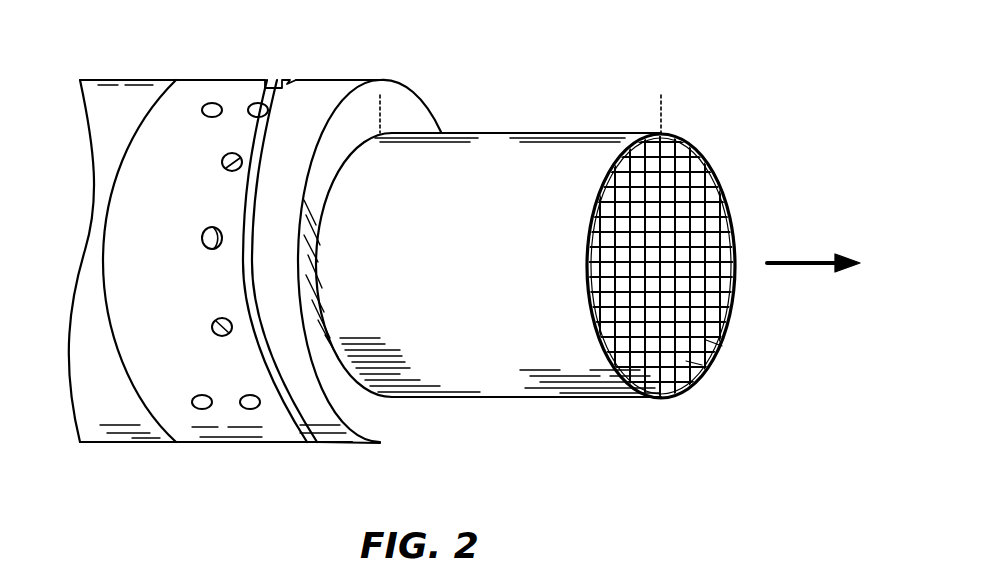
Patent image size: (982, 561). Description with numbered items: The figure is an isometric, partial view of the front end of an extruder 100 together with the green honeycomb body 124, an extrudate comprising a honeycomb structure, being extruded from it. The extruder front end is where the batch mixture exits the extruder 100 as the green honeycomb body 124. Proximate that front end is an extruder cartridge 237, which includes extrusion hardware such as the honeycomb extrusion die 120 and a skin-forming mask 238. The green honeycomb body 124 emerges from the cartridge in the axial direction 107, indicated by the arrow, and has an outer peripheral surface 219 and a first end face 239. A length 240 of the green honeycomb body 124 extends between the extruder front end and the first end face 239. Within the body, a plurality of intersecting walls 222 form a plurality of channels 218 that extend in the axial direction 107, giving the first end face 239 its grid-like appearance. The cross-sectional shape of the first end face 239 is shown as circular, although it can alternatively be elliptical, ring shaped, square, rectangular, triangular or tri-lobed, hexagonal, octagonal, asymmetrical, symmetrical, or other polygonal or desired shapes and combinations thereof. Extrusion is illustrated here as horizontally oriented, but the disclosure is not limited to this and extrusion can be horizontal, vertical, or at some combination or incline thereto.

The extruder 100 is at (233, 78).
The honeycomb extrusion die 120 is at (329, 78).
The green honeycomb body 124 is at (487, 396).
The axial direction 107 is at (818, 258).
The channels 218 is at (723, 277).
The outer peripheral surface 219 is at (550, 399).
The intersecting walls 222 is at (688, 363).
The extruder cartridge 237 is at (282, 444).
The skin-forming mask 238 is at (343, 444).
The first end face 239 is at (727, 204).
The length 240 is at (659, 112).